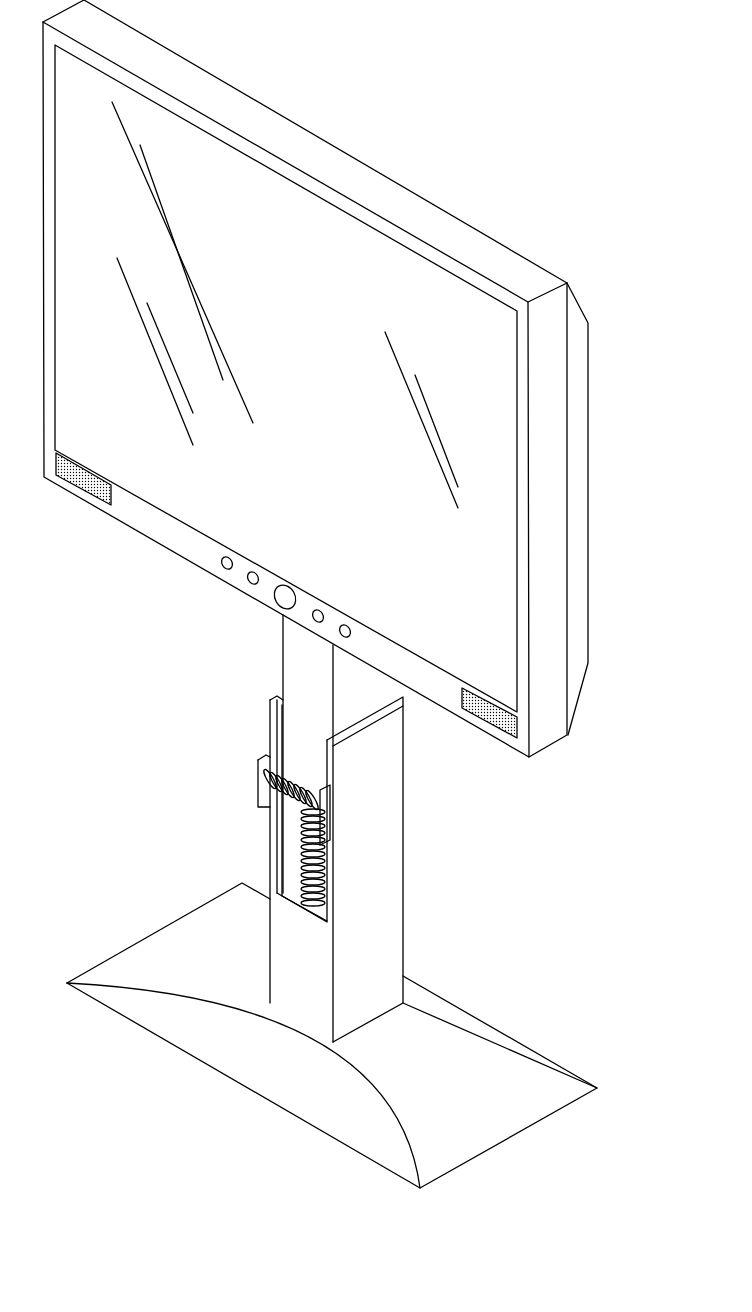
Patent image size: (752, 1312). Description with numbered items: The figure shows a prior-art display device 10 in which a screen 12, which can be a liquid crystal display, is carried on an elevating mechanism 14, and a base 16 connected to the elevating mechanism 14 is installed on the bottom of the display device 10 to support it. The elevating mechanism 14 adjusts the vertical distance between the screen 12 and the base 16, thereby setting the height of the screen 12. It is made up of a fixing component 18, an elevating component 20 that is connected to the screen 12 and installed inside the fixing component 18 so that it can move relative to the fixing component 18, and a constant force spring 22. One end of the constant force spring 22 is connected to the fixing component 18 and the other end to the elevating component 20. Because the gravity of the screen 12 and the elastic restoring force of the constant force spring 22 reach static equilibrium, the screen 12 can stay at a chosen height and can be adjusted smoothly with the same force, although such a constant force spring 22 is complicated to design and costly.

The display device 10 is at (497, 103).
The screen 12 is at (292, 137).
The elevating mechanism 14 is at (173, 893).
The base 16 is at (483, 1067).
The fixing component 18 is at (290, 952).
The elevating component 20 is at (303, 675).
The constant force spring 22 is at (262, 784).